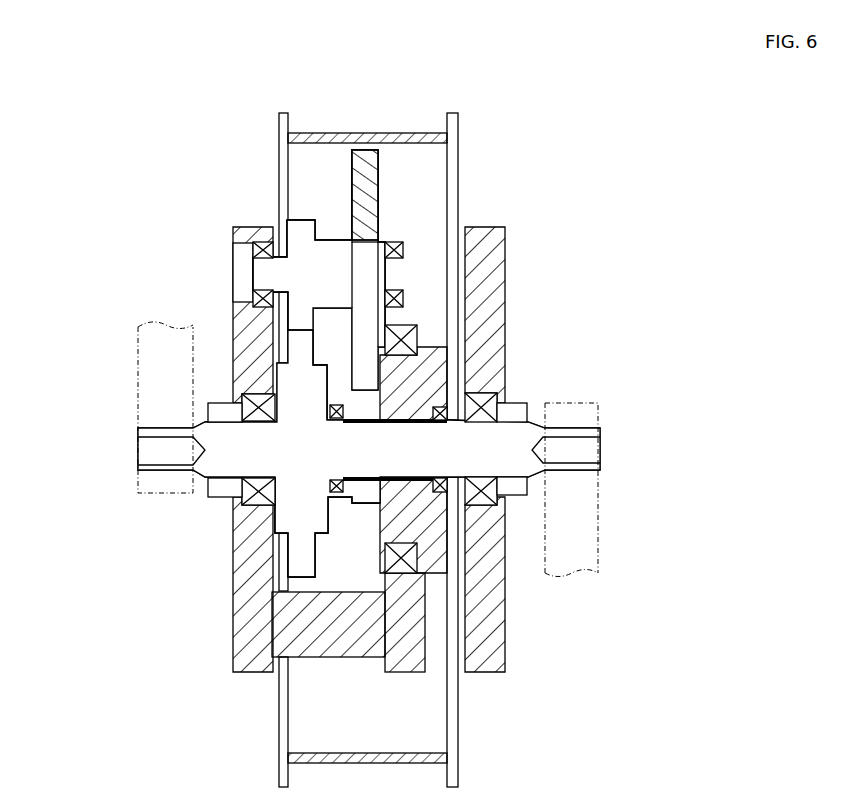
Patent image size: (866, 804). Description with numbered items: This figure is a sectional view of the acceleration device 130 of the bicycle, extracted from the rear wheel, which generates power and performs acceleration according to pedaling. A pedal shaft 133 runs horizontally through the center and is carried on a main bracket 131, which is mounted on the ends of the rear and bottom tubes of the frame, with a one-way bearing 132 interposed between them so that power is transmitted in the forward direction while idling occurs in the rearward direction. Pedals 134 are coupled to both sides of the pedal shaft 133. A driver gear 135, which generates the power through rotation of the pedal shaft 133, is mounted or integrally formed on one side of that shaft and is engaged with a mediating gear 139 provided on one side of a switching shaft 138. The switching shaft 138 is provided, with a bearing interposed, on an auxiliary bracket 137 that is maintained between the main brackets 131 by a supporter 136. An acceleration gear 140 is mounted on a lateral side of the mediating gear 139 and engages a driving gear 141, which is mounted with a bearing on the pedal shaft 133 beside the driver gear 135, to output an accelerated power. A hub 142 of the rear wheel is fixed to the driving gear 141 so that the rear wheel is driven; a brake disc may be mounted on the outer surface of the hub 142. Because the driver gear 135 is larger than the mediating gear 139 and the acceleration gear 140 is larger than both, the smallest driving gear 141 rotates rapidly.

The acceleration device 130 is at (605, 185).
The main bracket 131 is at (490, 271).
The one-way bearing 132 is at (487, 400).
The pedal shaft 133 is at (580, 463).
The pedals 134 is at (158, 369).
The driver gear 135 is at (283, 550).
The supporter 136 is at (330, 640).
The auxiliary bracket 137 is at (405, 657).
The switching shaft 138 is at (335, 250).
The mediating gear 139 is at (300, 218).
The acceleration gear 140 is at (382, 188).
The driving gear 141 is at (427, 373).
The hub 142 is at (458, 150).